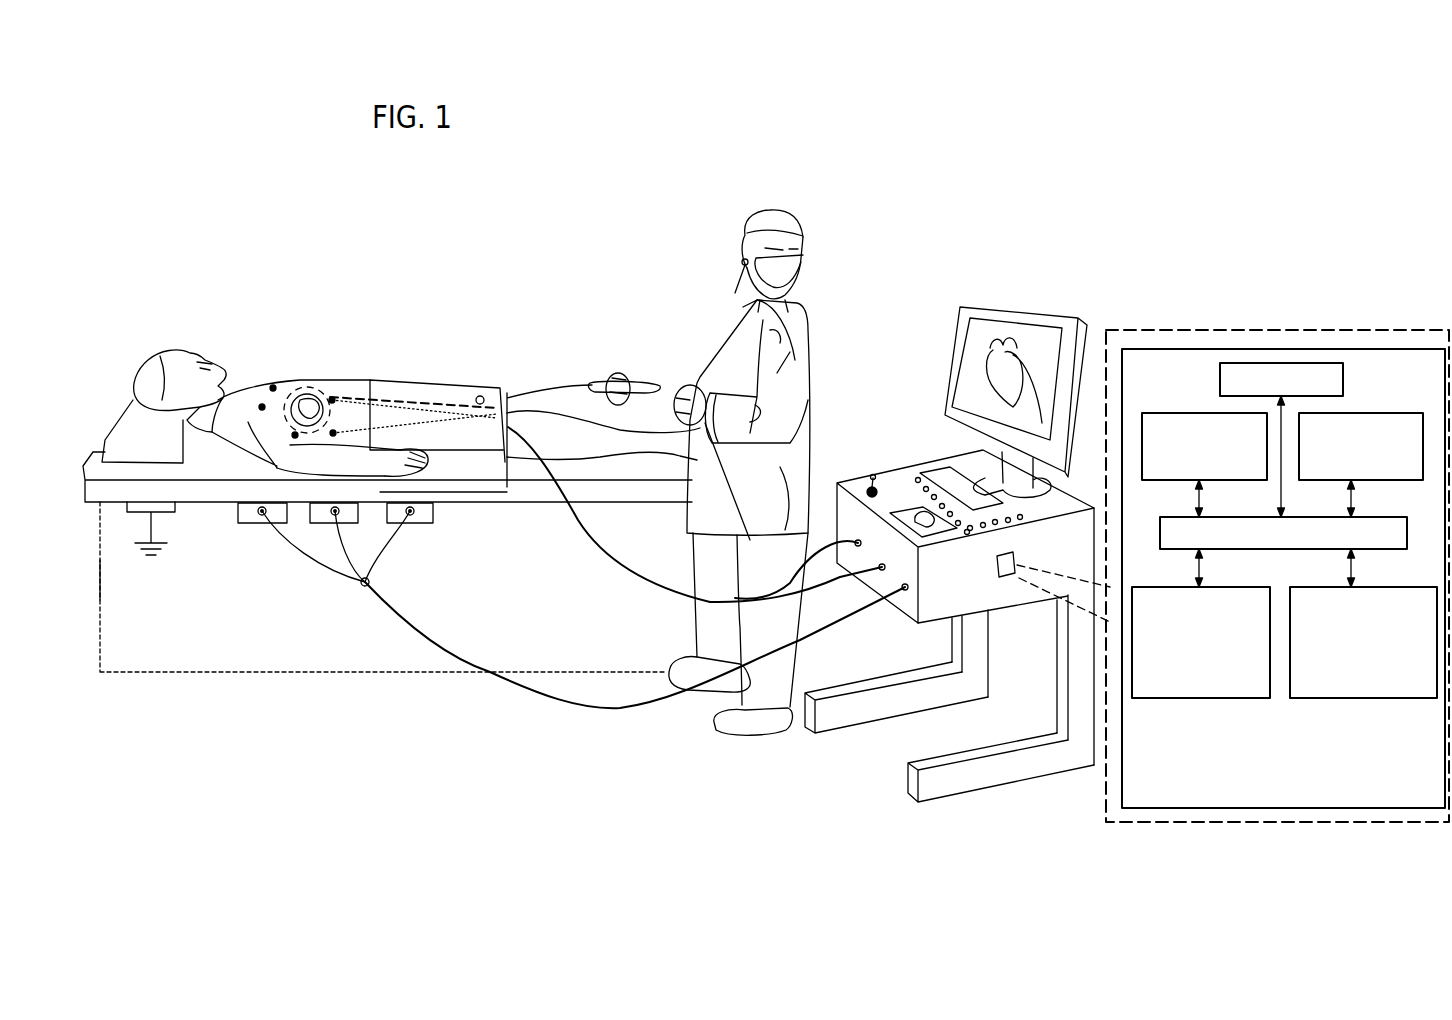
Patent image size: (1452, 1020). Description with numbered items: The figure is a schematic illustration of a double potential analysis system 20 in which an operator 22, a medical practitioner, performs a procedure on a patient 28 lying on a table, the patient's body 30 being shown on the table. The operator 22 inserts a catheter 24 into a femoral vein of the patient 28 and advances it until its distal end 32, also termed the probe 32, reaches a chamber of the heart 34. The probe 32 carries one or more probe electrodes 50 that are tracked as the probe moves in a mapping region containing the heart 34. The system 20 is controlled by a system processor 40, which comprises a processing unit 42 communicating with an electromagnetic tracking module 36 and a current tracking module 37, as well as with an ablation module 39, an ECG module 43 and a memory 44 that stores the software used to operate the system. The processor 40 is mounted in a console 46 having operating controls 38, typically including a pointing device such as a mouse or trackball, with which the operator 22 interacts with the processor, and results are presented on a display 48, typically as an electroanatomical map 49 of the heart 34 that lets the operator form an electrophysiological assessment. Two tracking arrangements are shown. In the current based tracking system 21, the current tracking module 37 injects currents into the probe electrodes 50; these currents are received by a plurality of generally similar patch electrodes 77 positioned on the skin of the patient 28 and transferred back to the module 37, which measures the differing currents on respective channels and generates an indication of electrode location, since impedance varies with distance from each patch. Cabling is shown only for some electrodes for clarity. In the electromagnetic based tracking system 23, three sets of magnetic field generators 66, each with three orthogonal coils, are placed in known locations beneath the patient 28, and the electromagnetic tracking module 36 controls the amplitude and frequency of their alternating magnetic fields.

The double potential analysis system 20 is at (925, 250).
The current based tracking system 21 is at (265, 720).
The operator 22 is at (763, 212).
The electromagnetic based tracking system 23 is at (318, 718).
The catheter 24 is at (590, 385).
The patient 28 is at (580, 450).
The patient 30 is at (273, 423).
The distal end 32 is at (290, 227).
The heart 34 is at (307, 395).
The electromagnetic tracking module 36 is at (1205, 698).
The current tracking module 37 is at (1353, 698).
The operating controls 38 is at (860, 378).
The ablation module 39 is at (1183, 412).
The system processor 40 is at (1106, 788).
The processing unit 42 is at (1173, 517).
The ECG module 43 is at (1368, 412).
The memory 44 is at (1273, 363).
The console 46 is at (898, 475).
The display 48 is at (975, 305).
The electroanatomical map 49 is at (1003, 340).
The probe electrodes 50 is at (220, 227).
The magnetic field generators 66 is at (410, 523).
The patch electrodes 77 is at (332, 400).